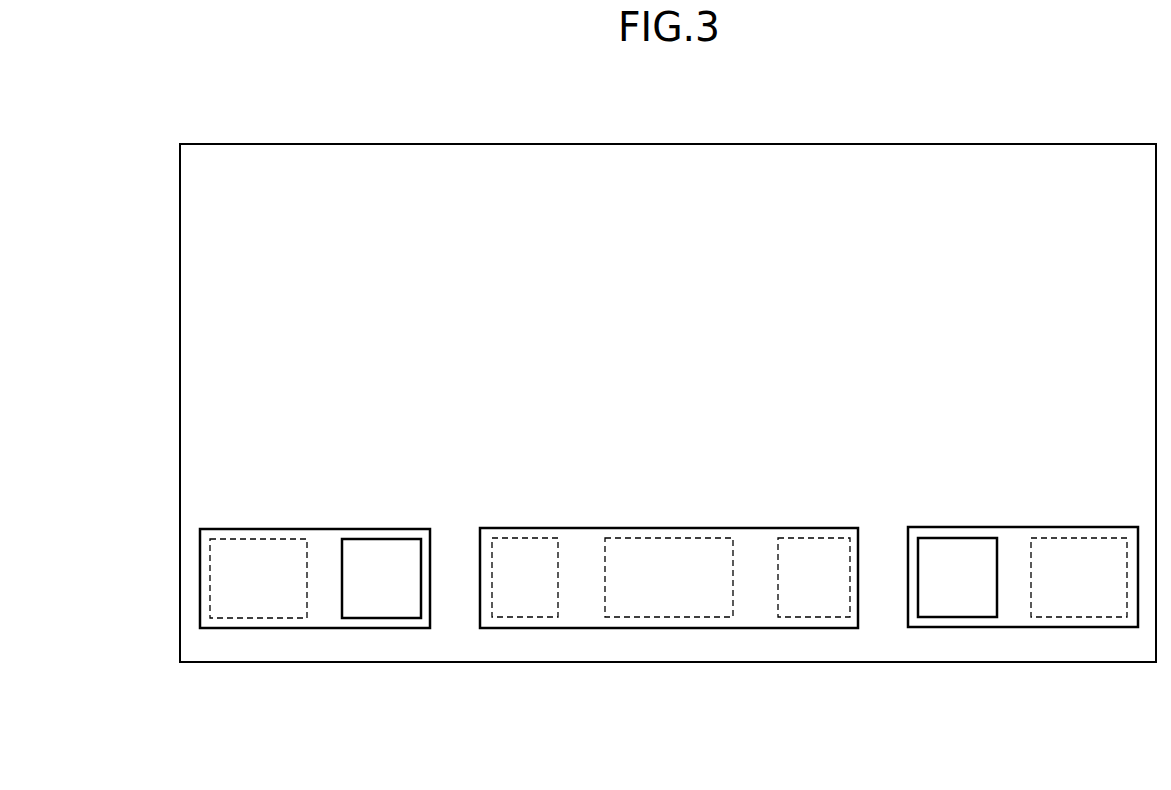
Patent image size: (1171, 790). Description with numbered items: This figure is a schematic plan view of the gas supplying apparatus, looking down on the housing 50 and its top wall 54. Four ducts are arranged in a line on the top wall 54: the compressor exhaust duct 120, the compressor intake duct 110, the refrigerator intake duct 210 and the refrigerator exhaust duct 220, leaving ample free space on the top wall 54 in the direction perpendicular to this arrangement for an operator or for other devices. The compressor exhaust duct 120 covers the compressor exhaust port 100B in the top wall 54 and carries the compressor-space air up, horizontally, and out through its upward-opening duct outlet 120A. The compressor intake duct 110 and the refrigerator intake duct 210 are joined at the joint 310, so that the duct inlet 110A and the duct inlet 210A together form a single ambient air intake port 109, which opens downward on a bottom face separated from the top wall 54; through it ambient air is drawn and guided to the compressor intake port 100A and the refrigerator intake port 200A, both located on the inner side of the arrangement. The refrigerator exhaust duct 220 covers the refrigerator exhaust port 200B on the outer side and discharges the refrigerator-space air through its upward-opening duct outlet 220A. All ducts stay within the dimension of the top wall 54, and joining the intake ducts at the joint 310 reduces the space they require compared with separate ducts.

The housing 50 is at (210, 143).
The top wall 54 is at (355, 188).
The compressor exhaust duct 120 is at (315, 630).
The compressor exhaust port 100B is at (238, 558).
The duct outlet 120A is at (383, 558).
The compressor intake duct 110 is at (540, 630).
The compressor intake port 100A is at (530, 556).
The duct inlet 110A is at (625, 558).
The duct inlet 210A is at (713, 556).
The ambient air intake port 109 is at (669, 563).
The refrigerator intake port 200A is at (808, 556).
The joint 310 is at (669, 594).
The refrigerator intake duct 210 is at (803, 630).
The refrigerator exhaust duct 220 is at (1035, 629).
The duct outlet 220A is at (945, 557).
The refrigerator exhaust port 200B is at (1081, 557).